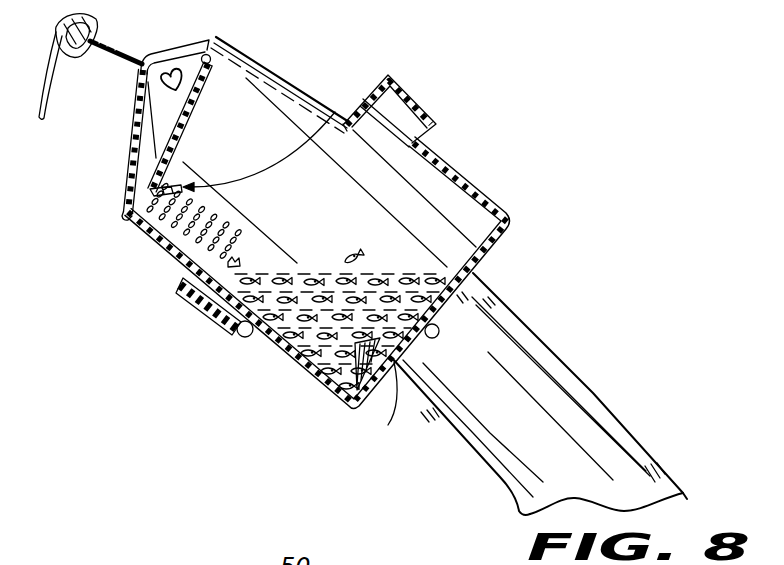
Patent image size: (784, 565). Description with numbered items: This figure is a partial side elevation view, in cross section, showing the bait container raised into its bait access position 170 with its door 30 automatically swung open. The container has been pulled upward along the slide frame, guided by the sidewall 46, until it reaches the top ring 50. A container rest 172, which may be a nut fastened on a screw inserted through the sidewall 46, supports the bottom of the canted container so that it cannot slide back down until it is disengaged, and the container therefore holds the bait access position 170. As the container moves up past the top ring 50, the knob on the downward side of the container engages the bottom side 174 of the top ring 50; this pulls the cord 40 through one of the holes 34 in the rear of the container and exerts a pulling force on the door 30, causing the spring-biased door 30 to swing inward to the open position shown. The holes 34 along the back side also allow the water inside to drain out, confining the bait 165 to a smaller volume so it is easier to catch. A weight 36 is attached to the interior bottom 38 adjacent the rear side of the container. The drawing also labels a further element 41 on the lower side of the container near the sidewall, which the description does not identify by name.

The door 30 is at (210, 110).
The holes 34 is at (173, 258).
The weight 36 is at (343, 400).
The interior bottom 38 is at (374, 405).
The cord 40 is at (128, 219).
The pivot ball 41 is at (247, 339).
The sidewall 46 is at (593, 393).
The top ring 50 is at (414, 100).
The bait 165 is at (300, 273).
The bait access position 170 is at (552, 232).
The container rest 172 is at (438, 333).
The bottom side 174 is at (227, 330).